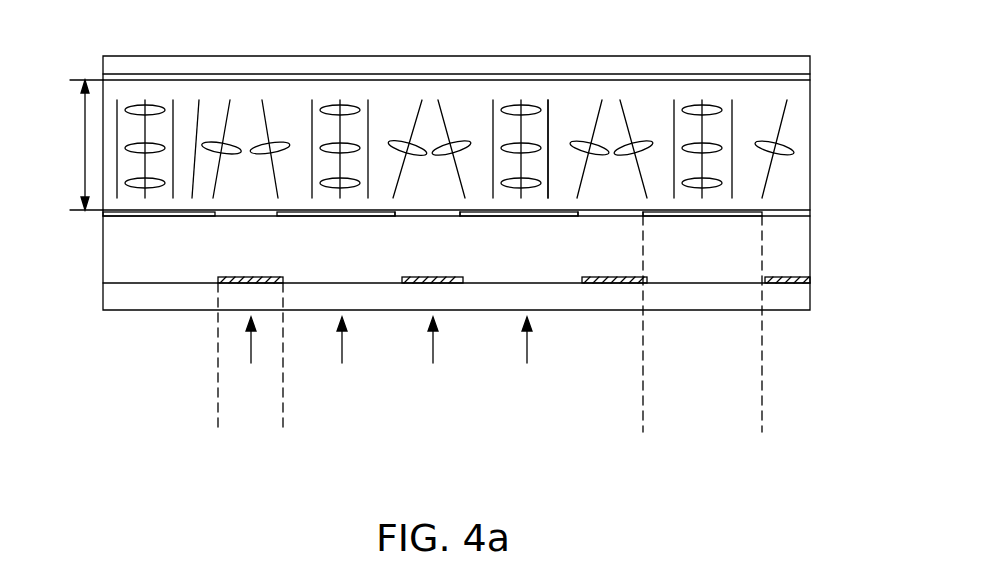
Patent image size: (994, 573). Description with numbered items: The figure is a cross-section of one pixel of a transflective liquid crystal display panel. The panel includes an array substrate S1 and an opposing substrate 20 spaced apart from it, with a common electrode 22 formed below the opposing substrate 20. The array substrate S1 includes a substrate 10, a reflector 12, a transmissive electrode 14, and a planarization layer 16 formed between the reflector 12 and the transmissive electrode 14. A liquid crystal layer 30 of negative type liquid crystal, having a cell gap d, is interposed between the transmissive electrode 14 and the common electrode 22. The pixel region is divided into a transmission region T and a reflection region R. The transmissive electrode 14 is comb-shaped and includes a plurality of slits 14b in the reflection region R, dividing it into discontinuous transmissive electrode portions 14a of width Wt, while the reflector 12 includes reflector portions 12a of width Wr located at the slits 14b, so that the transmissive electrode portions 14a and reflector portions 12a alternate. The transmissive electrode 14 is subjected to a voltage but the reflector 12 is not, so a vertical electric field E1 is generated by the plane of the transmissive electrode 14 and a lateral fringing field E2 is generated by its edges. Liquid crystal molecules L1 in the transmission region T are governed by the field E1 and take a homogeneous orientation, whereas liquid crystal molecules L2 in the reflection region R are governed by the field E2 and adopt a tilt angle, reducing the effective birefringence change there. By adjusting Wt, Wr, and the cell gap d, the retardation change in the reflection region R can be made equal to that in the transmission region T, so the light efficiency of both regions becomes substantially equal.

The opposing substrate 20 is at (785, 66).
The common electrode 22 is at (742, 79).
The liquid crystal layer 30 is at (802, 138).
The liquid crystal molecules L1 is at (513, 106).
The vertical electric field E1 is at (548, 133).
The lateral field E2 is at (591, 112).
The liquid crystal molecules L2 is at (640, 143).
The cell gap d is at (84, 145).
The substrate 10 is at (783, 302).
The planarization layer 16 is at (740, 260).
The transmissive electrode portions 14a is at (475, 217).
The slits 14b is at (422, 217).
The transmissive electrode 14 is at (495, 458).
The reflector portions 12a is at (260, 283).
The reflector 12 is at (473, 458).
The width of the reflector portions Wr is at (275, 423).
The width of the transmissive electrode portions Wt is at (754, 425).
The reflection region R is at (342, 354).
The transmission region T is at (434, 354).
The array substrate S1 is at (812, 213).